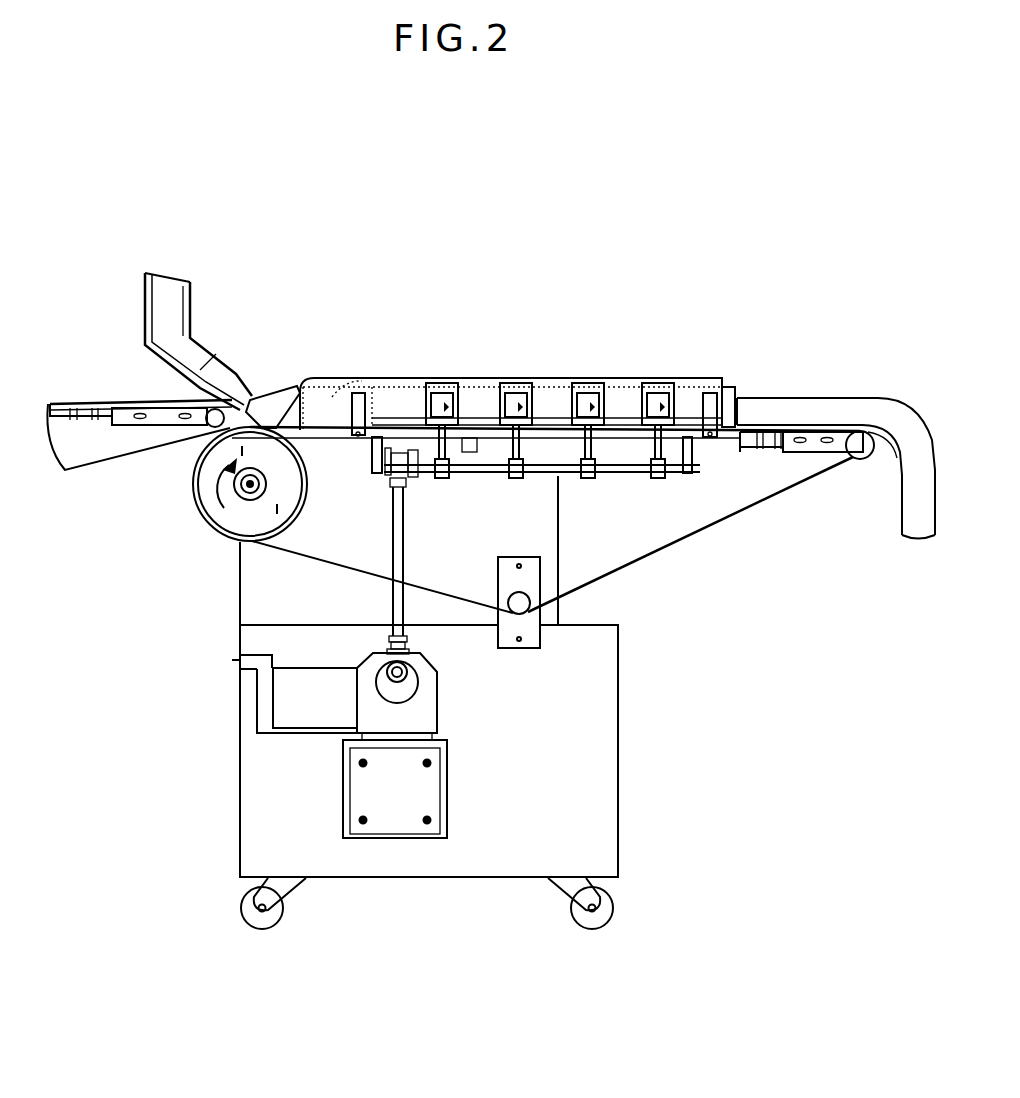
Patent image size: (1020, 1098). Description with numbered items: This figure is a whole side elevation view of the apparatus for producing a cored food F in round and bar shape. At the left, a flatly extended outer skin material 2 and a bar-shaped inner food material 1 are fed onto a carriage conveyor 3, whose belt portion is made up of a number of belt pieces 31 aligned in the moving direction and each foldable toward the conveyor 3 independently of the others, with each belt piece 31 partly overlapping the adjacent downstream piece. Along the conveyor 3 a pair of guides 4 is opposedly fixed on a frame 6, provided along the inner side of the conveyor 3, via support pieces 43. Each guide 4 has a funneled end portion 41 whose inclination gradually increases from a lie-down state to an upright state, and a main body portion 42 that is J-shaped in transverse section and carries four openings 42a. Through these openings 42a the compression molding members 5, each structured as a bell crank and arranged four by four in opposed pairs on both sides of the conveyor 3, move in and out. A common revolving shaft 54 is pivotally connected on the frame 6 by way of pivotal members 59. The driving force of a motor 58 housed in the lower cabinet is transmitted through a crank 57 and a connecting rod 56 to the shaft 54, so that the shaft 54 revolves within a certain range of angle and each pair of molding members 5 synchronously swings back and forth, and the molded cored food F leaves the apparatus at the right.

The inner food material 1 is at (240, 388).
The outer skin material 2 is at (105, 400).
The carriage conveyor 3 is at (184, 495).
The guide 4 is at (368, 376).
The compression molding member 5 is at (440, 395).
The frame 6 is at (737, 435).
The belt piece 31 is at (270, 403).
The end portion of guide 41 is at (285, 386).
The main body portion of guide 42 is at (382, 378).
The opening 42a is at (462, 385).
The support piece 43 is at (355, 420).
The common revolving shaft 54 is at (613, 477).
The connecting rod 56 is at (404, 524).
The crank 57 is at (414, 690).
The motor 58 is at (310, 727).
The pivotal member 59 is at (372, 462).
The cored food F is at (793, 408).